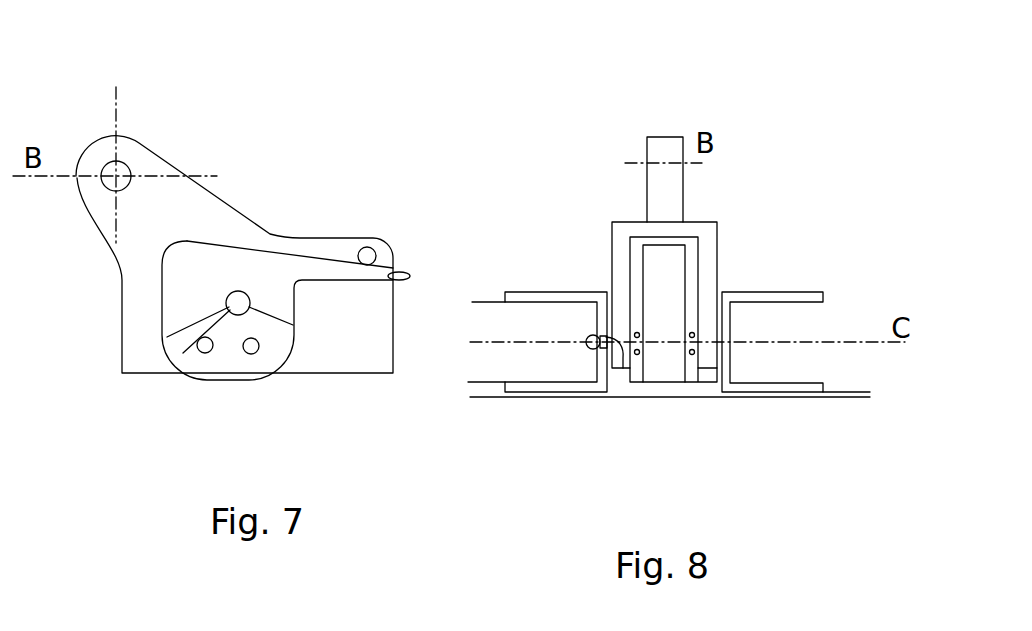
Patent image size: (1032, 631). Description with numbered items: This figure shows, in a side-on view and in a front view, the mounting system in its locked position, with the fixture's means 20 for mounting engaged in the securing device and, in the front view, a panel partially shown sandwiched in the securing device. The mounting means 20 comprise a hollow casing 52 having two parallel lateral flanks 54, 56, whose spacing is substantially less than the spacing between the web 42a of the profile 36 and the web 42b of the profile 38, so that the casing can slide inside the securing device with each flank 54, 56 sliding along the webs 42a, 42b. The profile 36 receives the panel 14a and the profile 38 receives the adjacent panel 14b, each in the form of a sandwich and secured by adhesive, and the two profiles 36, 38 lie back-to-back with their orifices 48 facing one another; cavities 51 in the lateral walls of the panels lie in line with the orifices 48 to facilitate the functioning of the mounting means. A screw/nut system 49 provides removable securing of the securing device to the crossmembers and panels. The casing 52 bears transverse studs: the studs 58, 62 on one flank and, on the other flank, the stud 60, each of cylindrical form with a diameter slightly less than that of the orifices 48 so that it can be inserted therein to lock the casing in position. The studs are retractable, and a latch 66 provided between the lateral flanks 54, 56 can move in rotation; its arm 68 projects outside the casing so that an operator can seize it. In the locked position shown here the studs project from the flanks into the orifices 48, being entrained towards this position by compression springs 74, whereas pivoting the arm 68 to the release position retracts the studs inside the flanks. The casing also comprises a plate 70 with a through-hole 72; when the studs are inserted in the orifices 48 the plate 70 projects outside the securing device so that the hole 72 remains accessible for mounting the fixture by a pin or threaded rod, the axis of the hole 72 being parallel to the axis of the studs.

In FIG. 7, the means for mounting 20 is at (305, 140).
In FIG. 8, the means for mounting 20 is at (737, 86).
In FIG. 7, the hollow casing 52 is at (160, 185).
In FIG. 8, the hollow casing 52 is at (685, 187).
In FIG. 7, the plate 70 is at (100, 148).
In FIG. 7, the through-hole 72 is at (120, 163).
In FIG. 7, the latch 66 is at (262, 248).
In FIG. 8, the latch 66 is at (687, 278).
In FIG. 7, the arm 68 is at (397, 270).
In FIG. 7, the transverse stud 58 is at (200, 353).
In FIG. 8, the transverse stud 58 is at (634, 355).
In FIG. 7, the transverse stud 62 is at (251, 354).
In FIG. 8, the lateral flank 56 is at (720, 240).
In FIG. 8, the lateral flank 54 is at (612, 275).
In FIG. 8, the compression springs 74 is at (637, 355).
In FIG. 8, the web 42a is at (578, 380).
In FIG. 8, the web 42b is at (727, 320).
In FIG. 8, the panel 14a is at (513, 330).
In FIG. 8, the panel 14b is at (807, 360).
In FIG. 8, the profile 38 is at (757, 392).
In FIG. 8, the cavities 51 is at (593, 334).
In FIG. 8, the screw/nut system 49 is at (600, 335).
In FIG. 8, the orifices 48 is at (601, 350).
In FIG. 8, the profile 36 is at (585, 382).
In FIG. 8, the transverse stud 60 is at (717, 382).